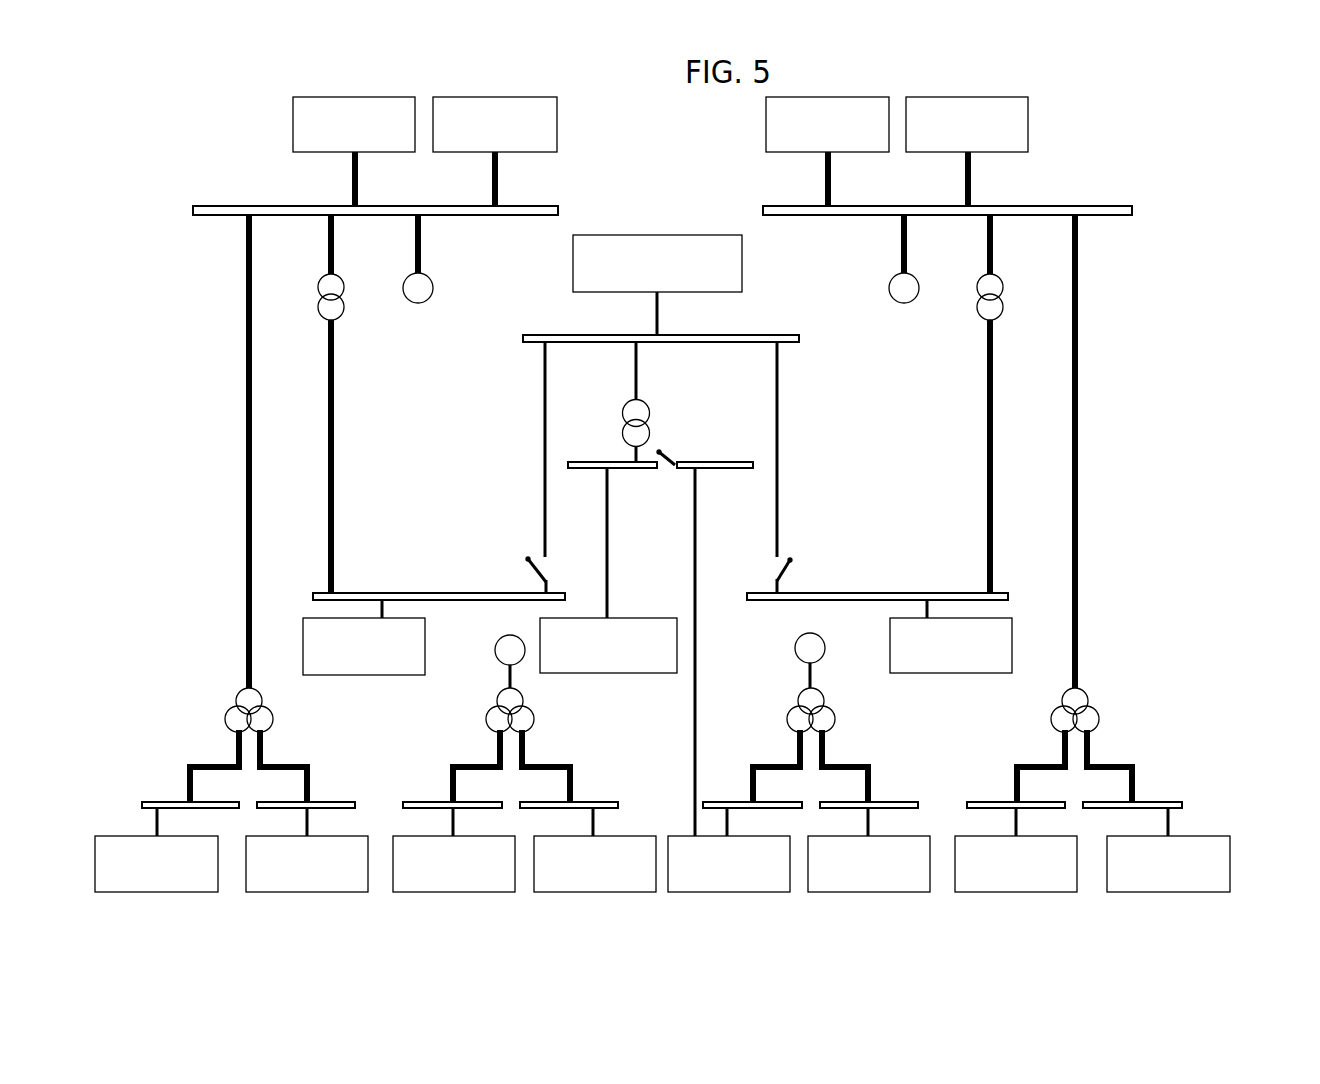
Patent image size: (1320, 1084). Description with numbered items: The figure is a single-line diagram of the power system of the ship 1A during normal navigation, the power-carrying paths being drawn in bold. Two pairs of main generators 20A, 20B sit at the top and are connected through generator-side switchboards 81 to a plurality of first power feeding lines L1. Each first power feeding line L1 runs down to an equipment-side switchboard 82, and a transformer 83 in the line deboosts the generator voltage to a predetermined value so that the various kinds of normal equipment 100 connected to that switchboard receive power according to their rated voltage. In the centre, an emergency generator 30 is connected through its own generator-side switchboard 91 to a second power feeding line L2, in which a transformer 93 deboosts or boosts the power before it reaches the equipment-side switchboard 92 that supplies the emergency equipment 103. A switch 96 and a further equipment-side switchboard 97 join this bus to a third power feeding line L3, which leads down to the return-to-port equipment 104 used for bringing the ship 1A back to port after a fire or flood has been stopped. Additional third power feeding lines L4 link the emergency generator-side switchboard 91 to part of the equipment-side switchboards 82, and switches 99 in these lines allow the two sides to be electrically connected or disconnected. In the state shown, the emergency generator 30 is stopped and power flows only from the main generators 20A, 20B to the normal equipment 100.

The ship 1A is at (1185, 188).
The main generator 20A is at (323, 155).
The main generator 20B is at (802, 153).
The emergency generator 30 is at (637, 233).
The generator-side switchboard 81 is at (193, 205).
The equipment-side switchboard 82 is at (470, 593).
The transformer 83 is at (343, 312).
The generator-side switchboard 91 is at (742, 335).
The equipment-side switchboard 92 is at (607, 462).
The transformer 93 is at (651, 427).
The switch 96 is at (664, 450).
The equipment-side switchboard 97 is at (777, 437).
The switch 99 is at (527, 557).
The normal equipment 100 is at (662, 749).
The emergency equipment 103 is at (618, 673).
The return-to-port equipment 104 is at (1000, 618).
The first power feeding line L1 is at (422, 250).
The second power feeding line L2 is at (634, 392).
The third power feeding line L3 is at (697, 600).
The third power feeding line L4 is at (544, 465).